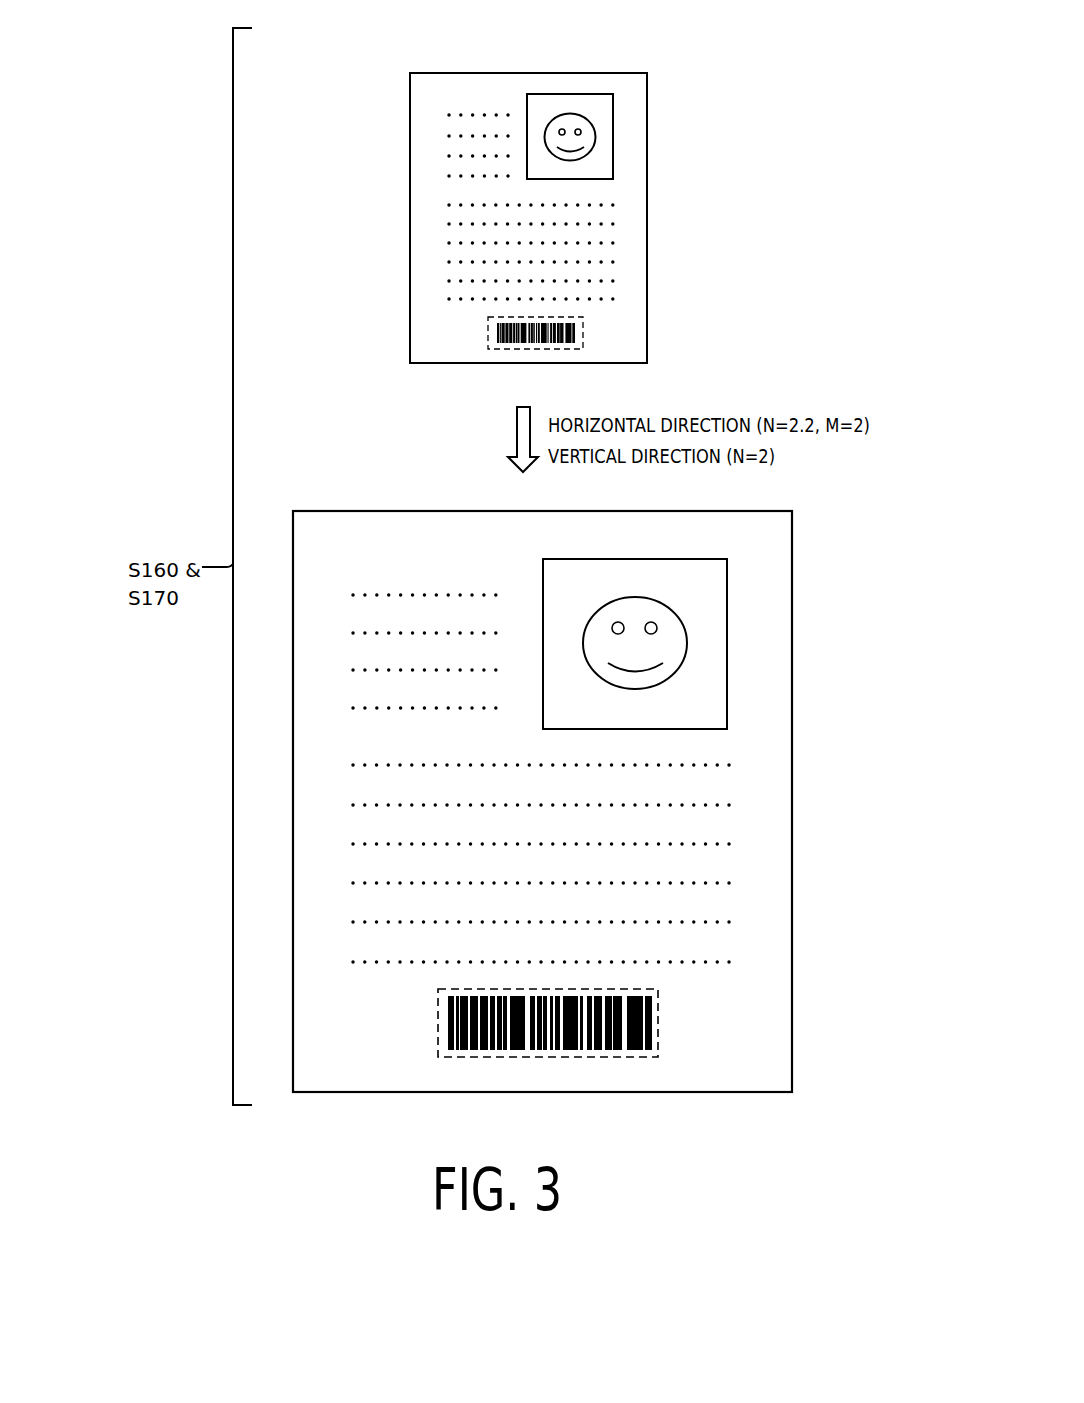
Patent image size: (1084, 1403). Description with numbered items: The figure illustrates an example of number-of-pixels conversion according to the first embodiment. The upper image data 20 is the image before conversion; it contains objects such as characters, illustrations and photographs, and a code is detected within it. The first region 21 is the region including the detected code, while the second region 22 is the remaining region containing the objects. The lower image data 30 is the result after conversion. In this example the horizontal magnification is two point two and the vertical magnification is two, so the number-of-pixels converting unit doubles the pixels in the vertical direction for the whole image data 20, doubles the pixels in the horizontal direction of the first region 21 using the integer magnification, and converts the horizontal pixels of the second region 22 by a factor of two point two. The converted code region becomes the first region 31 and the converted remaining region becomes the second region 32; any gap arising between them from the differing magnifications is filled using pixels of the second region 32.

The image data 20 is at (574, 202).
The first region 21 is at (583, 332).
The second region 22 is at (633, 232).
The image data 30 is at (582, 785).
The first region 31 is at (657, 1012).
The second region 32 is at (758, 905).